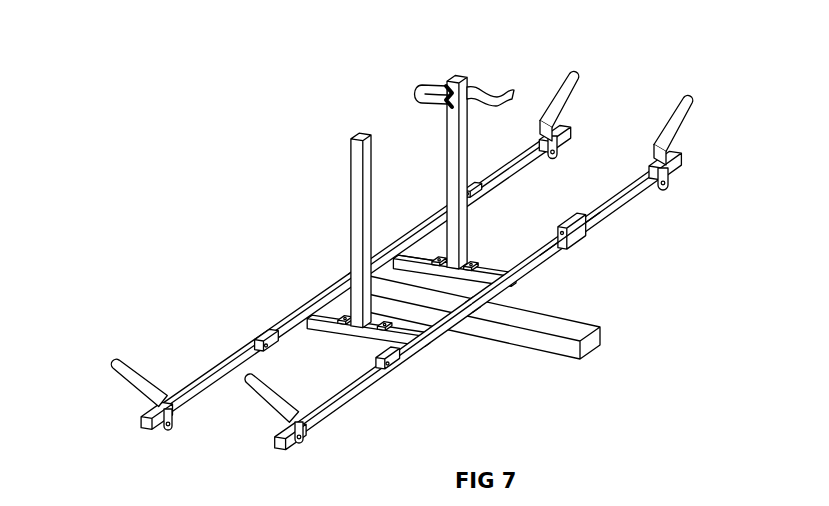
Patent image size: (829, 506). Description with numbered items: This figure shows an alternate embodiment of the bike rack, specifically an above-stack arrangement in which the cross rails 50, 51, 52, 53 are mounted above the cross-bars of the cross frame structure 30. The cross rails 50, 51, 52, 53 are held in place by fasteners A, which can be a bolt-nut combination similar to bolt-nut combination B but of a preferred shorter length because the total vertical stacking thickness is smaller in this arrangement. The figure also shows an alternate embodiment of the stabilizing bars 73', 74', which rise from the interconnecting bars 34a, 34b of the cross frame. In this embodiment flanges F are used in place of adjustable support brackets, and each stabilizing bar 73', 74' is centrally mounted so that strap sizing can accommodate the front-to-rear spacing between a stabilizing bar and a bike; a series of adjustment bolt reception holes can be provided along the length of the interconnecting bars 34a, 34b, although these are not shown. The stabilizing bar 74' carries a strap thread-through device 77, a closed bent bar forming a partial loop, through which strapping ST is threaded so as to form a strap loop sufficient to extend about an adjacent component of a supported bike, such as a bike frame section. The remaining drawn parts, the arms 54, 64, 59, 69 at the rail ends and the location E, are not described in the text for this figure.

The cross frame structure 30 is at (405, 253).
The cross rail 50 is at (192, 383).
The cross rail 51 is at (505, 178).
The cross rail 52 is at (323, 414).
The cross rail 53 is at (622, 208).
The interconnecting bar 34a is at (322, 329).
The interconnecting bar 34b is at (498, 268).
The stabilizing bar 73' is at (291, 227).
The stabilizing bar 74' is at (397, 153).
The strap and/or lock thread through device 77 is at (447, 92).
The strapping ST is at (498, 92).
The pivot arm 54 is at (113, 366).
The pivot arm 64 is at (262, 397).
The pivot arm 59 is at (576, 78).
The pivot arm 69 is at (690, 101).
The flange F is at (494, 239).
The edge of cross member E is at (461, 268).
The fastener A is at (588, 232).
The bolt-nut combination B is at (467, 334).